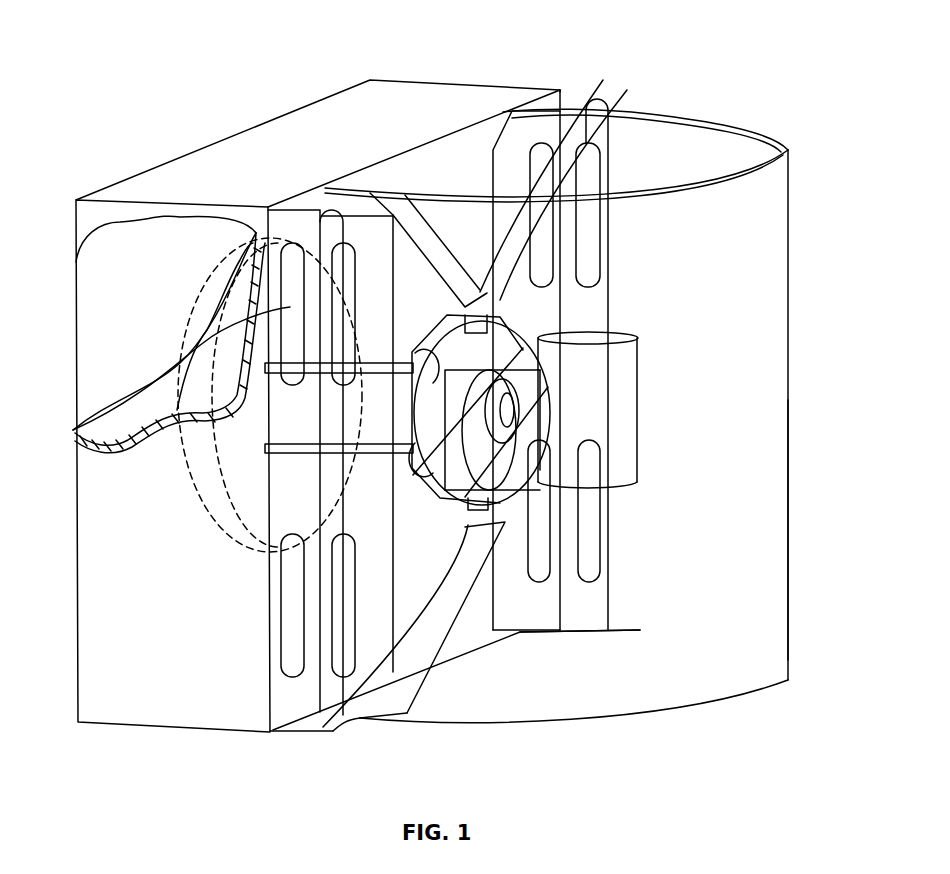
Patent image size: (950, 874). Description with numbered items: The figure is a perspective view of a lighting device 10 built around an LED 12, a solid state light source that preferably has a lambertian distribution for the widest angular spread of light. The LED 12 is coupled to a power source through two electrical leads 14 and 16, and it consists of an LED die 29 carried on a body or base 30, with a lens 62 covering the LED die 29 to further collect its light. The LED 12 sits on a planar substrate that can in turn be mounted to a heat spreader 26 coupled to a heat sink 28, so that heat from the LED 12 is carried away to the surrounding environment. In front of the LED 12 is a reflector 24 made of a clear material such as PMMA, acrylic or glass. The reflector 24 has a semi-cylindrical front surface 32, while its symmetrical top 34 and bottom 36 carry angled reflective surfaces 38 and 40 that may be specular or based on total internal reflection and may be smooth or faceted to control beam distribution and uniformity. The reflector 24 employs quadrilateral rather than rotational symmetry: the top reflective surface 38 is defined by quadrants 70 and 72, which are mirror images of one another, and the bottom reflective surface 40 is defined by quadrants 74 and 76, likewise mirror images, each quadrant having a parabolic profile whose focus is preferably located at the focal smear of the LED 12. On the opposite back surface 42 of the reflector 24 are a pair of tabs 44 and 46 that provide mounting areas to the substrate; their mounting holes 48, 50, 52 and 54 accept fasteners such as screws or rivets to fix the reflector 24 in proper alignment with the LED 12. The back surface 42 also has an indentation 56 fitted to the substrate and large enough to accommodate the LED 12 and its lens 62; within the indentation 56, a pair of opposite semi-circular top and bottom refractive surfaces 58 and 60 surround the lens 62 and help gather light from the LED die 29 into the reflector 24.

The lighting device 10 is at (408, 72).
The LED 12 is at (547, 397).
The electrical lead 14 is at (385, 465).
The electrical lead 16 is at (385, 362).
The reflector 24 is at (747, 147).
The heat spreader 26 is at (227, 540).
The heat sink 28 is at (117, 698).
The LED die 29 is at (568, 617).
The body or base 30 is at (432, 487).
The semi-cylindrical front surface 32 is at (762, 543).
The top 34 is at (630, 112).
The bottom 36 is at (662, 695).
The angled reflective surface 38 is at (430, 673).
The angled reflective surface 40 is at (573, 127).
The back surface 42 is at (360, 716).
The tab 44 is at (257, 473).
The tab 46 is at (610, 267).
The mounting hole 48 is at (76, 437).
The mounting hole 50 is at (290, 663).
The mounting hole 52 is at (603, 217).
The mounting hole 54 is at (590, 563).
The indentation 56 is at (537, 347).
The top refractive surface 58 is at (616, 338).
The bottom refractive surface 60 is at (590, 520).
The lens 62 is at (533, 438).
The quadrant 70 is at (685, 150).
The quadrant 72 is at (463, 230).
The quadrant 74 is at (603, 600).
The quadrant 76 is at (472, 673).